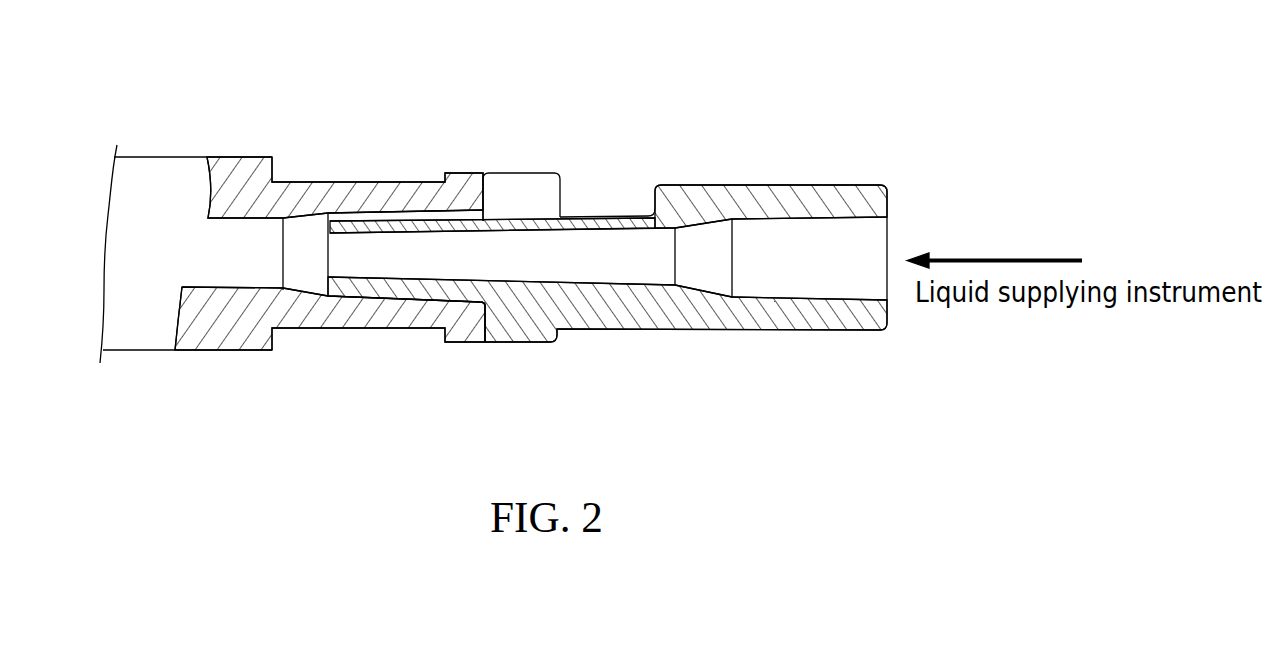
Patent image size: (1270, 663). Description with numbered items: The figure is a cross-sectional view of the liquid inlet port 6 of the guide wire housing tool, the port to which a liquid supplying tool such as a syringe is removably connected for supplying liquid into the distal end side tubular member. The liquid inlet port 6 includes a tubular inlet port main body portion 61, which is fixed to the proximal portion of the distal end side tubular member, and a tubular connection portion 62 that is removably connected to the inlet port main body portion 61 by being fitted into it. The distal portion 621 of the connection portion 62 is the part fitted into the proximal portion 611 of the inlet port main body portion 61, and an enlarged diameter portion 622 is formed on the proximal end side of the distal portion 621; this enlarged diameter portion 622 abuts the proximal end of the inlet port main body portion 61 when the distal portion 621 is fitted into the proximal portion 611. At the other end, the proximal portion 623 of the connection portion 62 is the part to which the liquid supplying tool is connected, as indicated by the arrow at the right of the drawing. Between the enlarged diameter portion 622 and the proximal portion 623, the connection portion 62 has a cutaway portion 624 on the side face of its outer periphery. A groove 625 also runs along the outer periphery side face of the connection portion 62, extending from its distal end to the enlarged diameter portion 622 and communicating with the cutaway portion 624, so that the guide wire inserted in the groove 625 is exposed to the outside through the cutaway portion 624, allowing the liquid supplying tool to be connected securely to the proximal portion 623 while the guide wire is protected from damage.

The liquid inlet port 6 is at (712, 93).
The inlet port main body portion 61 is at (345, 184).
The proximal portion of the inlet port main body portion 611 is at (405, 313).
The connection portion 62 is at (735, 185).
The distal portion of the connection portion 621 is at (402, 224).
The enlarged diameter portion 622 is at (525, 185).
The proximal portion of the connection portion 623 is at (787, 315).
The cutaway portion 624 is at (606, 197).
The groove 625 is at (418, 216).